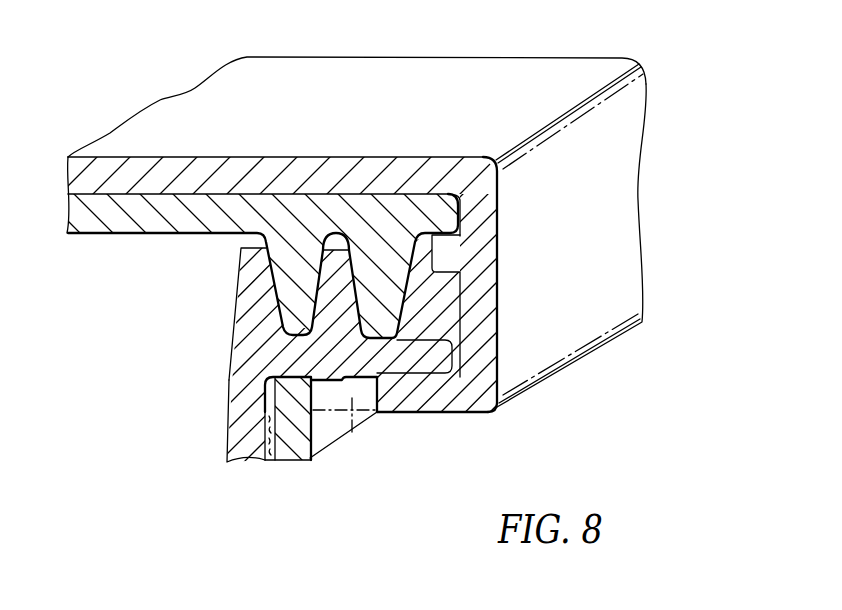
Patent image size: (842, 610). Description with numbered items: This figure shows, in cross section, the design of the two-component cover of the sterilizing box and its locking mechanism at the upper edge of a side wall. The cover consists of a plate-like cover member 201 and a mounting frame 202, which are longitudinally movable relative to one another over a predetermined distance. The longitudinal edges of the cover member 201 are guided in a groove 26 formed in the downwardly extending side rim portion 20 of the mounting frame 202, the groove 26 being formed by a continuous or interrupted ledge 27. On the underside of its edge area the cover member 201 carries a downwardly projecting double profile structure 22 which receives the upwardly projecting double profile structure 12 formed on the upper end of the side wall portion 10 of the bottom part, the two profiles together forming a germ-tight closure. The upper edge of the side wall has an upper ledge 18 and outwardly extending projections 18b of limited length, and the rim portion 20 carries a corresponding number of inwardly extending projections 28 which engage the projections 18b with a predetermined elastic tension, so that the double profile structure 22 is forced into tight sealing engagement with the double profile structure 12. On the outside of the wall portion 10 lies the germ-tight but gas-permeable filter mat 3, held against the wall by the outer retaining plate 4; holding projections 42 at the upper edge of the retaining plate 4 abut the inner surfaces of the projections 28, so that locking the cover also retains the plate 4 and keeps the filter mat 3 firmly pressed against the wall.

The mounting frame 202 is at (512, 87).
The side rim portion 20 is at (617, 282).
The cover member 201 is at (150, 218).
The double profile structure 22 is at (297, 242).
The upper ledge 18 is at (322, 352).
The outwardly extending projections 18b is at (425, 360).
The double profile structure 12 is at (240, 289).
The wall portion 10 is at (247, 410).
The groove 26 is at (460, 221).
The ledge 27 is at (445, 256).
The inwardly extending projections 28 is at (417, 390).
The retaining plate 4 is at (293, 443).
The filter mat 3 is at (262, 437).
The holding projections 42 is at (352, 431).